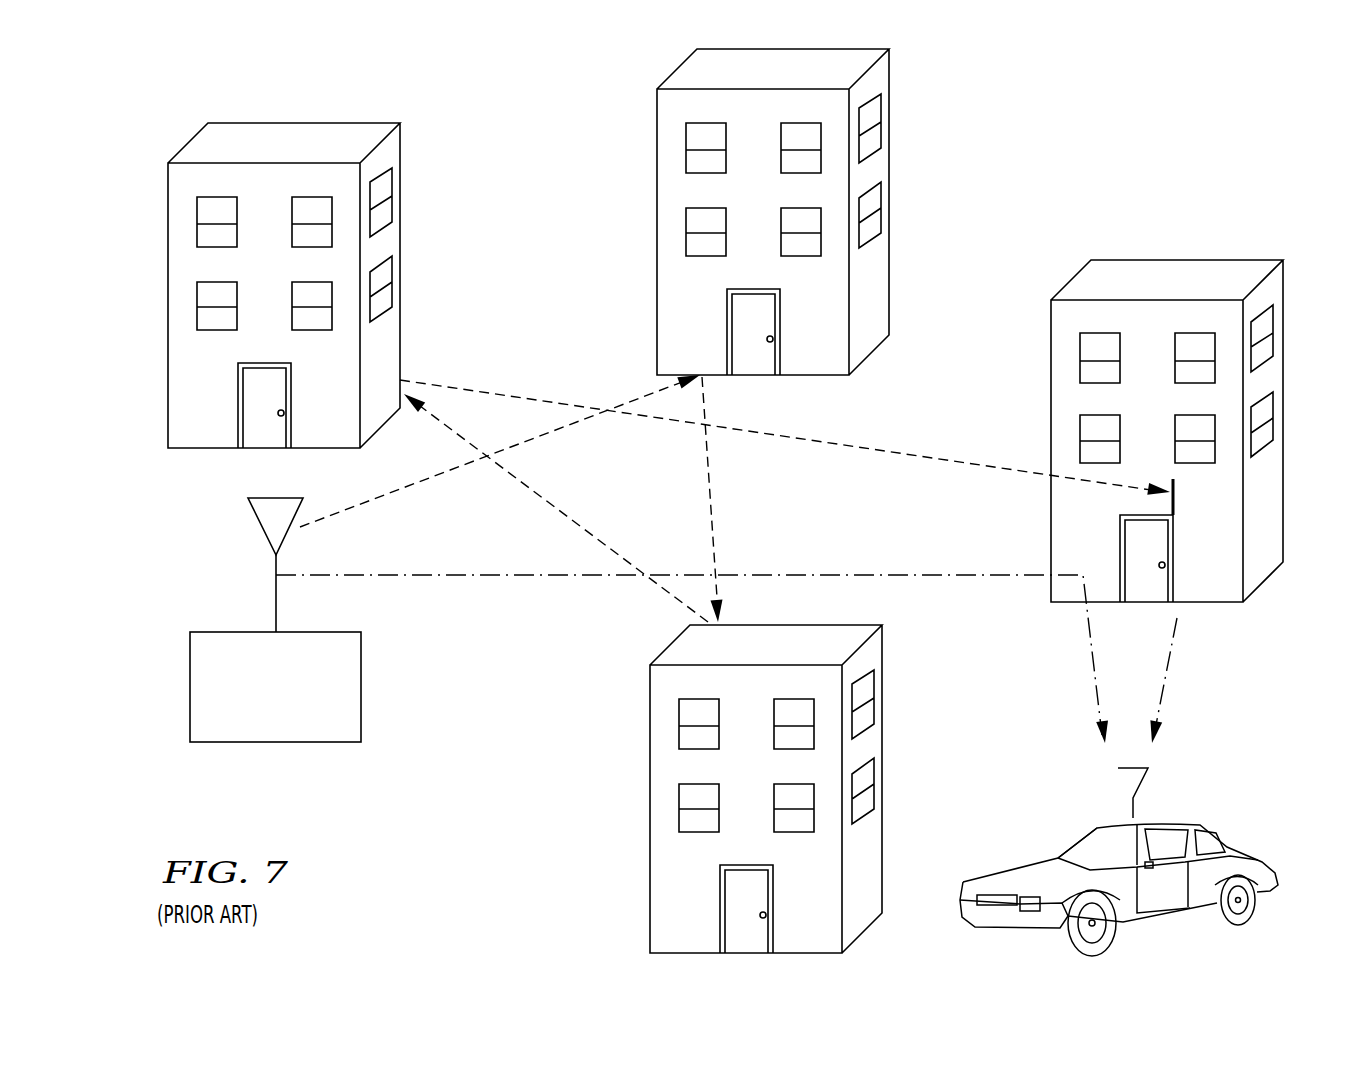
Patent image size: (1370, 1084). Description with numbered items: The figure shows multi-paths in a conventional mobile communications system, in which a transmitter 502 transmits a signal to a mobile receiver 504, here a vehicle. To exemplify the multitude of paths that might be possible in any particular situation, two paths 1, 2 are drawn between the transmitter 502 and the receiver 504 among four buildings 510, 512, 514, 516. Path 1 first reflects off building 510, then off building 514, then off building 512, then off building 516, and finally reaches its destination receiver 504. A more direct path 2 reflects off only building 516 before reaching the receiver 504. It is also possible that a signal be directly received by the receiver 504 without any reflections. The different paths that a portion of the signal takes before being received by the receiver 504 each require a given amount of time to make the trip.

The transmitter 502 is at (311, 745).
The mobile receiver 504 is at (1245, 850).
The building 510 is at (892, 248).
The building 512 is at (405, 340).
The building 514 is at (885, 749).
The building 516 is at (1287, 367).
The path 1 is at (275, 568).
The path 2 is at (402, 573).